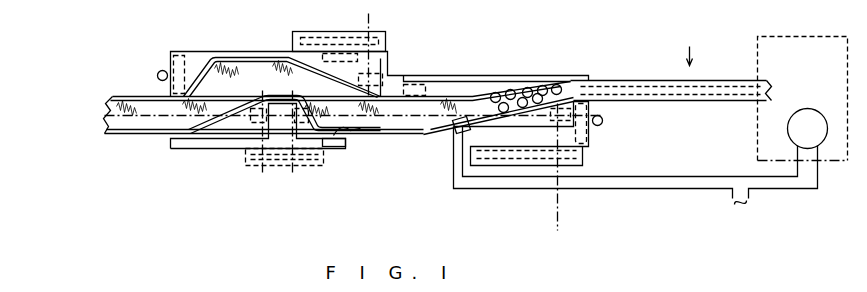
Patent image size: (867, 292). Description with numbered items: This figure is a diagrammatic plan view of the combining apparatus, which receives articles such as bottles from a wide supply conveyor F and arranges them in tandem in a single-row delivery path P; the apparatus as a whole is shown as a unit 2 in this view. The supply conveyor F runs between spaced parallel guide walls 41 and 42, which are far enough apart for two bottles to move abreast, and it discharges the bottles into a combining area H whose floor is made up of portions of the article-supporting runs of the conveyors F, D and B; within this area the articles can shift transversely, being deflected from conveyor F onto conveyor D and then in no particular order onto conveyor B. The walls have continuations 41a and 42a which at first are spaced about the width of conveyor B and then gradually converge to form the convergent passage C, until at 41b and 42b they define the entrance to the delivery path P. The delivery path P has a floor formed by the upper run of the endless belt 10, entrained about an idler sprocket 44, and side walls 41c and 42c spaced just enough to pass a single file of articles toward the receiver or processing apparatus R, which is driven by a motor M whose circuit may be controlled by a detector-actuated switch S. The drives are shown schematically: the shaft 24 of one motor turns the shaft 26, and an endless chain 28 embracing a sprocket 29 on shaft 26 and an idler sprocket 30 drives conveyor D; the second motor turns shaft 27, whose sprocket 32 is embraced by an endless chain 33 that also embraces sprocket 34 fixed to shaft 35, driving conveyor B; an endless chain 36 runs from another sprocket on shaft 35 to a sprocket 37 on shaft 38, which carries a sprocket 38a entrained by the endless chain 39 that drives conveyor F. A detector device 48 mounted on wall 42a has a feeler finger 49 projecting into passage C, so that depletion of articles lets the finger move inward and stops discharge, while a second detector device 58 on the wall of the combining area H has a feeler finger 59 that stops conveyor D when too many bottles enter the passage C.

The housing block 2 is at (386, 57).
The endless belt 10 is at (656, 92).
The motor shaft 24 is at (339, 35).
The shaft 26 is at (367, 25).
The shaft 27 is at (558, 216).
The endless chain 28 is at (247, 77).
The sprocket 29 is at (427, 76).
The idler sprocket 30 is at (187, 57).
The sprocket 32 is at (590, 135).
The endless chain 33 is at (452, 108).
The sprocket 34 is at (292, 170).
The shaft 35 is at (305, 168).
The endless chain 36 is at (276, 170).
The sprocket 37 is at (256, 162).
The shaft 38 is at (255, 160).
The sprocket 38a is at (243, 145).
The endless chain 39 is at (154, 119).
The guide wall 41 is at (112, 98).
The wall continuation 41a is at (503, 83).
The wall portion 41b is at (577, 80).
The side wall 41c is at (718, 82).
The guide wall 42 is at (103, 140).
The wall continuation 42a is at (440, 138).
The wall portion 42b is at (585, 95).
The side wall 42c is at (725, 103).
The idler sprocket 44 is at (417, 88).
The detector device 48 is at (460, 150).
The detector finger 49 is at (488, 160).
The second detector device 58 is at (340, 140).
The feeler finger 59 is at (355, 140).
The conveyor B is at (400, 132).
The convergent passage C is at (470, 103).
The conveyor D is at (362, 68).
The supply conveyor F is at (124, 136).
The combining area H is at (276, 68).
The motor M is at (810, 126).
The delivery path P is at (687, 44).
The receiver R is at (835, 152).
The detector-actuated switch S is at (739, 206).